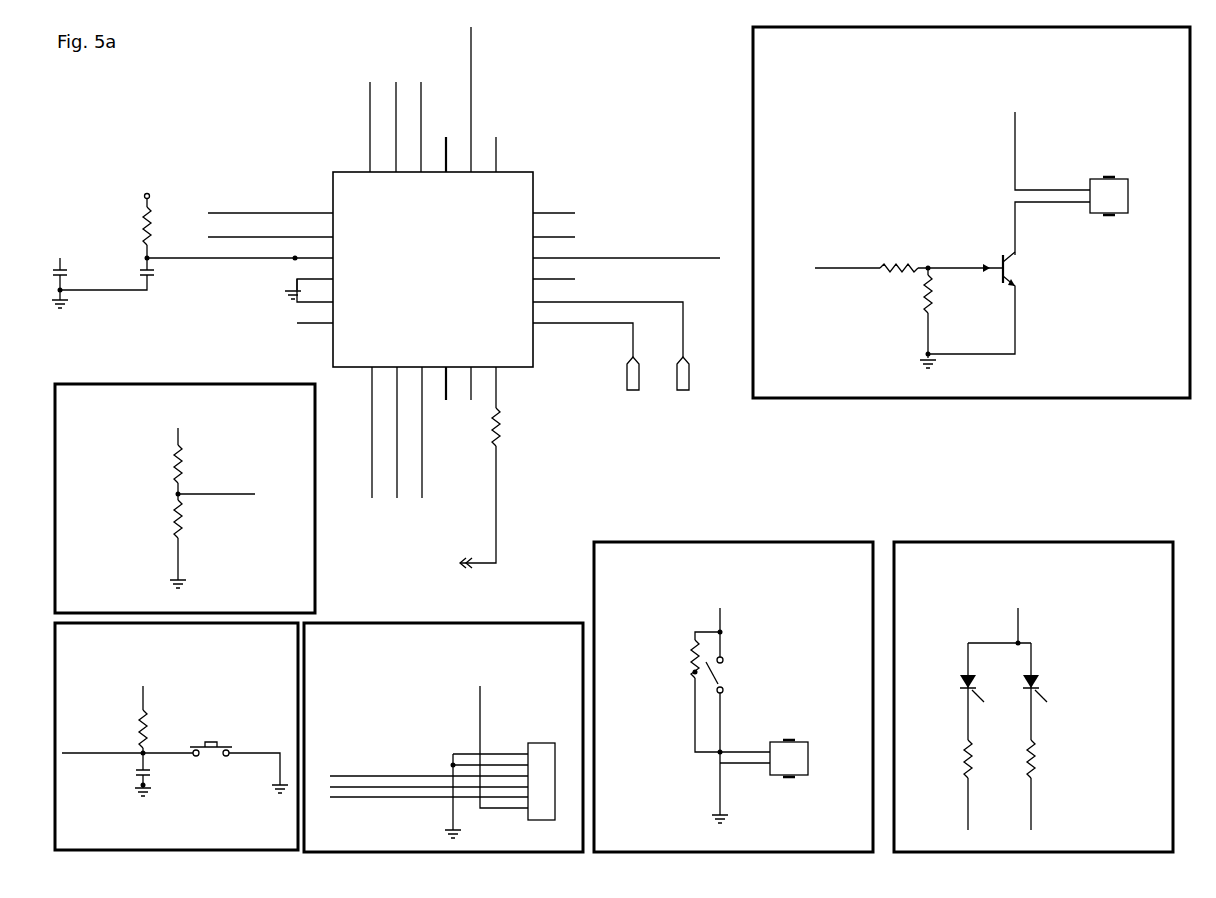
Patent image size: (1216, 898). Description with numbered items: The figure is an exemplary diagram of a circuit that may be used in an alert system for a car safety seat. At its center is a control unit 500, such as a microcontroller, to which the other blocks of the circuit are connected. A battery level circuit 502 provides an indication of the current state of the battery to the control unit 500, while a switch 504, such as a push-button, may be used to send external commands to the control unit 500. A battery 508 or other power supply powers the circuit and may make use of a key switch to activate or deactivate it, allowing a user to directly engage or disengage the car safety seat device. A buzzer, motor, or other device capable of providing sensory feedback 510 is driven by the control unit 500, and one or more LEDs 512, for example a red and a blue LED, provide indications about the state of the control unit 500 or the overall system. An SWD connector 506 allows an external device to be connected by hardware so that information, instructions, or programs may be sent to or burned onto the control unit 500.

The control unit 500 is at (324, 174).
The battery level circuit 502 is at (185, 488).
The switch 504 is at (176, 736).
The SWD connector 506 is at (443, 737).
The battery 508 is at (733, 686).
The sensory feedback device 510 is at (971, 212).
The LEDs 512 is at (1033, 686).